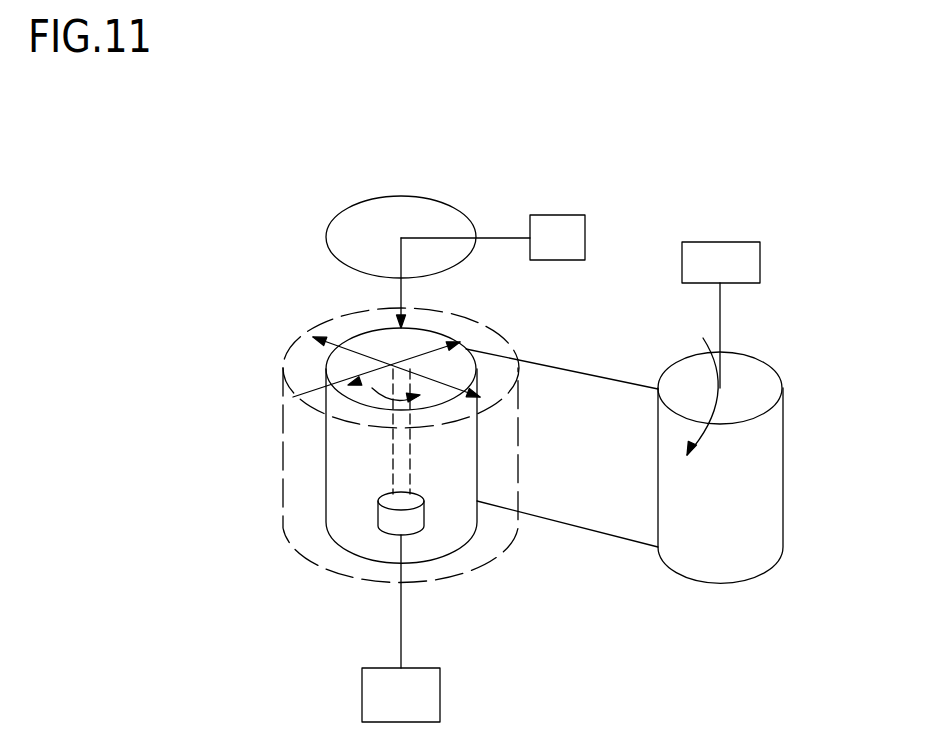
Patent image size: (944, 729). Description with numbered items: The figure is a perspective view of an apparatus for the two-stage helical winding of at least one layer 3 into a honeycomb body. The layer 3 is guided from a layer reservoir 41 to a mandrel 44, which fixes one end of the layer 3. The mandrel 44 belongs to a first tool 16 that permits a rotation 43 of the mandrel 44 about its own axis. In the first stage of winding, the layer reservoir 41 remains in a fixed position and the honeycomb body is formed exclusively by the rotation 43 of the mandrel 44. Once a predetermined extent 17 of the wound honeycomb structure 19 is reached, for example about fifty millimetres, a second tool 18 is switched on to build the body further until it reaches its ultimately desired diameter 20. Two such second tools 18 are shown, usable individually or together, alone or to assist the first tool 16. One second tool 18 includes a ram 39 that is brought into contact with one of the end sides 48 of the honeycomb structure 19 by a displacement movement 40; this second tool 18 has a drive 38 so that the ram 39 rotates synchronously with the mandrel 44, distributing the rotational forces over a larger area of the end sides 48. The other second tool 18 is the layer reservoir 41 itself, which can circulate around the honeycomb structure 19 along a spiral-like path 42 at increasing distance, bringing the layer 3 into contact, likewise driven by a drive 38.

The layer 3 is at (600, 512).
The first tool 16 is at (425, 707).
The extent 17 is at (293, 397).
The second tool 18 is at (525, 170).
The honeycomb structure 19 is at (357, 550).
The diameter 20 is at (385, 362).
The drive 38 is at (718, 257).
The ram 39 is at (357, 215).
The displacement movement 40 is at (400, 238).
The layer reservoir 41 is at (742, 560).
The path 42 is at (715, 403).
The rotation 43 is at (365, 400).
The mandrel 44 is at (390, 475).
The end side 48 is at (385, 343).